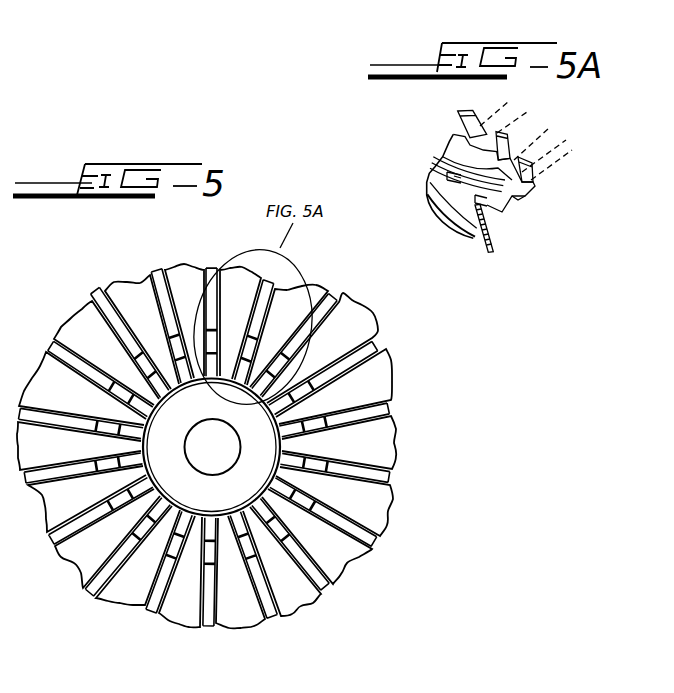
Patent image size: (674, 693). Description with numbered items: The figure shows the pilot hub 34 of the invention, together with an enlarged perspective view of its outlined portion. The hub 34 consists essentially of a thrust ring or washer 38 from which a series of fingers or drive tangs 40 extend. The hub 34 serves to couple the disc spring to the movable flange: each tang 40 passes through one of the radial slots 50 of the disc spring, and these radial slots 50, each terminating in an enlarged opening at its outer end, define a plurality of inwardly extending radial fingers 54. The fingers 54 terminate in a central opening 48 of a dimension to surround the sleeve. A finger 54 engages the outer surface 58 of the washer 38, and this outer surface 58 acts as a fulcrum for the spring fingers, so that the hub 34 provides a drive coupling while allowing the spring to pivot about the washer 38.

In FIG. 5A, the pilot hub 34 is at (477, 210).
In FIG. 5A, the thrust ring or washer 38 is at (499, 220).
In FIG. 5, the drive tangs 40 is at (322, 427).
In FIG. 5A, the drive tangs 40 is at (533, 183).
In FIG. 5, the central opening 48 is at (280, 447).
In FIG. 5, the radial slots 50 is at (378, 325).
In FIG. 5A, the radial slots 50 is at (553, 135).
In FIG. 5, the radial fingers 54 is at (376, 513).
In FIG. 5A, the radial fingers 54 is at (500, 118).
In FIG. 5A, the outer surface 58 is at (520, 197).